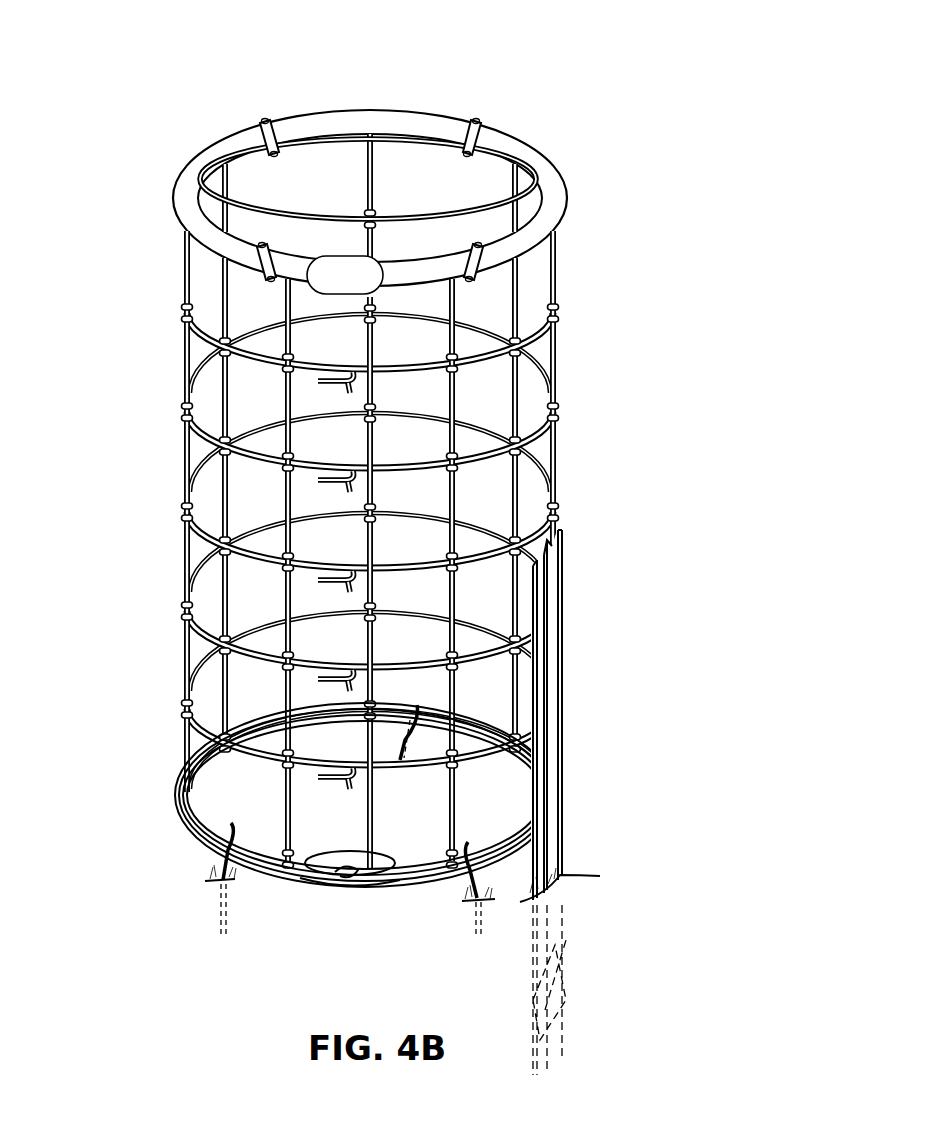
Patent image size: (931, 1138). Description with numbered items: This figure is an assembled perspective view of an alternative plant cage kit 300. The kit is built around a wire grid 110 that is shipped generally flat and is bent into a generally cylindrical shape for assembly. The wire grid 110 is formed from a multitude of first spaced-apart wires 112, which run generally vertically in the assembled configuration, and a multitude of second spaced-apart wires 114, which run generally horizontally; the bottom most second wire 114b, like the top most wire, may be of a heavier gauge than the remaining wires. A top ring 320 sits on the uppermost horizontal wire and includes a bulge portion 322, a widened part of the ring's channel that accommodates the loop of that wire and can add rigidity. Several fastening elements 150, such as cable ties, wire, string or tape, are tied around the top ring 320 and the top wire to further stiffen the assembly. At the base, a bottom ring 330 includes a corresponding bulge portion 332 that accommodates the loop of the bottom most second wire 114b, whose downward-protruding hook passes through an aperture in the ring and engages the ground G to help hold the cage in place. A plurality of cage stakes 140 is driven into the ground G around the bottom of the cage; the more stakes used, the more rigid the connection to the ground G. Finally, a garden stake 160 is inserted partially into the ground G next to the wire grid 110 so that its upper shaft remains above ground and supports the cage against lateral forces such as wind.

The plant cage kit 300 is at (630, 65).
The wire grid 110 is at (560, 343).
The first spaced-apart wires 112 is at (182, 262).
The second spaced-apart wires 114 is at (192, 384).
The bottom most second wire 114b is at (183, 820).
The fastening elements 150 is at (268, 119).
The top ring 320 is at (384, 112).
The bulge portion 322 is at (336, 260).
The bottom ring 330 is at (262, 872).
The bulge portion 332 is at (330, 885).
The cage stakes 140 is at (417, 706).
The garden stake 160 is at (565, 730).
The ground G is at (210, 885).